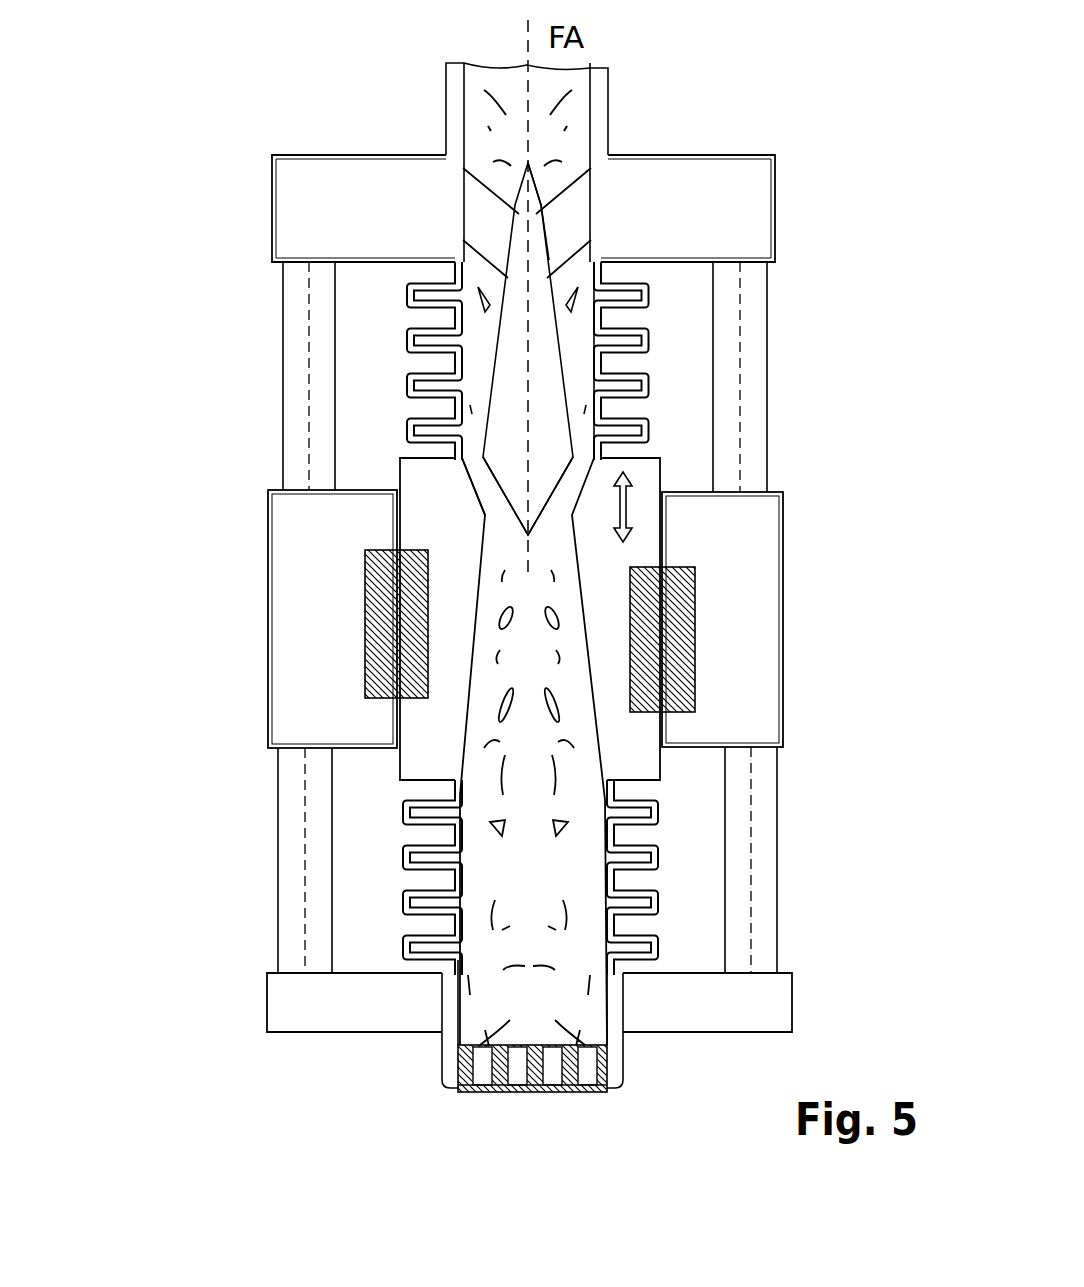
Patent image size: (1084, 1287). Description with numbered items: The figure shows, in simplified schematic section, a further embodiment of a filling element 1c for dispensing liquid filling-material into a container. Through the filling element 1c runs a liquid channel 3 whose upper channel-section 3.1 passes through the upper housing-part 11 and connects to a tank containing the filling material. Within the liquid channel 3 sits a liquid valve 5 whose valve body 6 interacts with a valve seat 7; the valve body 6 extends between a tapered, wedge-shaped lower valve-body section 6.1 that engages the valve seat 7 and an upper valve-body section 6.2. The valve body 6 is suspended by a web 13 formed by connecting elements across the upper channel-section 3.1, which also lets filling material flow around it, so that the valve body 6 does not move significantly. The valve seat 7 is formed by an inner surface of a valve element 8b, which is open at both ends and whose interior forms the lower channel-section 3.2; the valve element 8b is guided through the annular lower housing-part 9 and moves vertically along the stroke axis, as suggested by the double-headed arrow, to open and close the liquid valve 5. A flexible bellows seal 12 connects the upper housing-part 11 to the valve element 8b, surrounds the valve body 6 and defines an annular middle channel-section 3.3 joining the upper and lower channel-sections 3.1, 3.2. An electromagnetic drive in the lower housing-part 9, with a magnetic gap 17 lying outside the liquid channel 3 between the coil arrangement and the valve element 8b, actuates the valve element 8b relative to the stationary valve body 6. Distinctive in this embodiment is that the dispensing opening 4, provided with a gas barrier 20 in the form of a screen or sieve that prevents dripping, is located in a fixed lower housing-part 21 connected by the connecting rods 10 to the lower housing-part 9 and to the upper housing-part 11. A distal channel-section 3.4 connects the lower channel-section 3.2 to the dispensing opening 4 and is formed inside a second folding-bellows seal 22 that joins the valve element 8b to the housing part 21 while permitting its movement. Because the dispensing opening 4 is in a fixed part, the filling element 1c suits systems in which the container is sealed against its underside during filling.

The filling element 1c is at (241, 133).
The liquid channel 3 is at (468, 392).
The upper channel-section 3.1 is at (573, 123).
The lower channel-section 3.2 is at (558, 657).
The annular middle channel-section 3.3 is at (585, 380).
The distal channel-section 3.4 is at (577, 851).
The dispensing opening 4 is at (453, 1072).
The liquid valve 5 is at (443, 513).
The valve body 6 is at (518, 320).
The lower valve-body section 6.1 is at (510, 460).
The upper valve-body section 6.2 is at (540, 200).
The valve seat 7 is at (462, 474).
The valve element 8b is at (645, 752).
The lower housing-part 9 is at (770, 531).
The connecting rods 10 is at (762, 370).
The upper housing-part 11 is at (762, 204).
The seal 12 is at (656, 345).
The web 13 is at (488, 218).
The magnetic gap 17 is at (668, 543).
The gas barrier 20 is at (583, 1090).
The lower housing-part 21 is at (310, 993).
The seal 22 is at (657, 950).